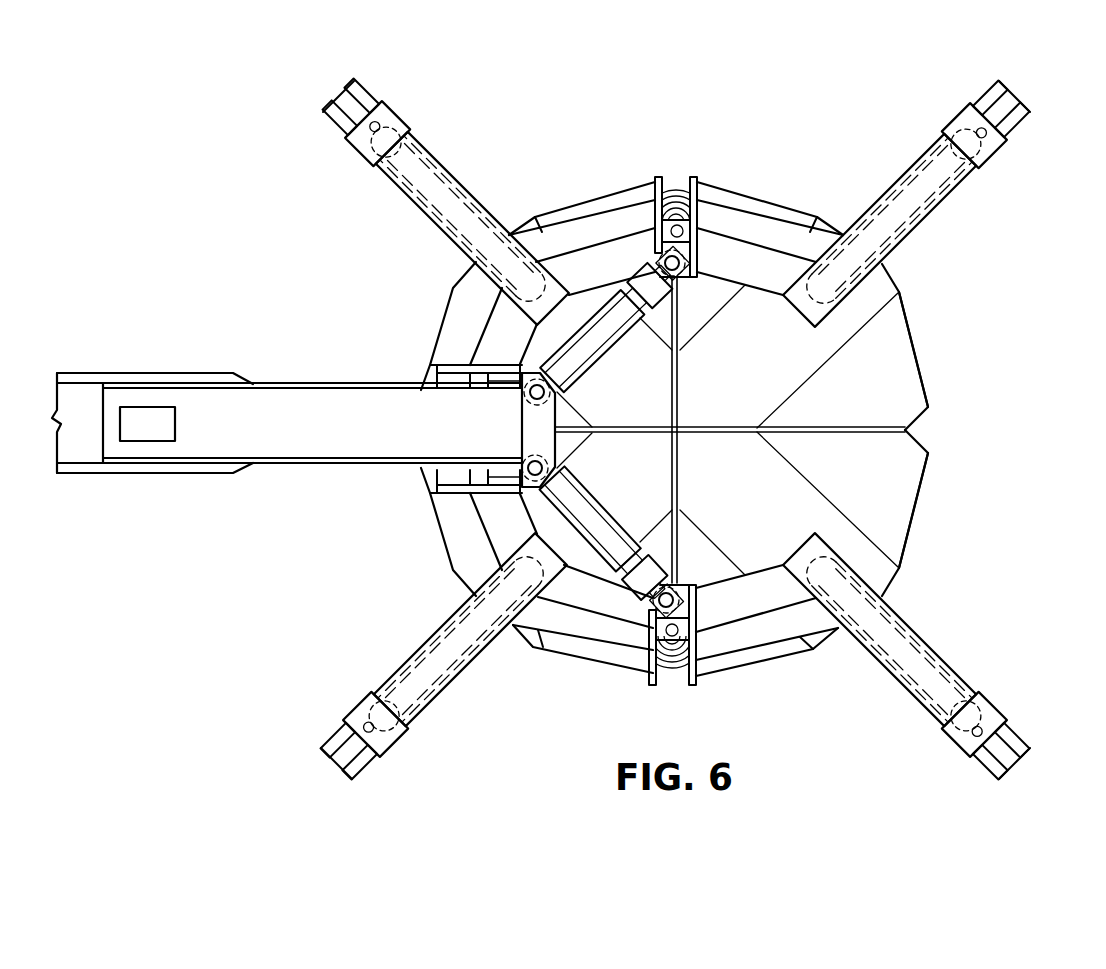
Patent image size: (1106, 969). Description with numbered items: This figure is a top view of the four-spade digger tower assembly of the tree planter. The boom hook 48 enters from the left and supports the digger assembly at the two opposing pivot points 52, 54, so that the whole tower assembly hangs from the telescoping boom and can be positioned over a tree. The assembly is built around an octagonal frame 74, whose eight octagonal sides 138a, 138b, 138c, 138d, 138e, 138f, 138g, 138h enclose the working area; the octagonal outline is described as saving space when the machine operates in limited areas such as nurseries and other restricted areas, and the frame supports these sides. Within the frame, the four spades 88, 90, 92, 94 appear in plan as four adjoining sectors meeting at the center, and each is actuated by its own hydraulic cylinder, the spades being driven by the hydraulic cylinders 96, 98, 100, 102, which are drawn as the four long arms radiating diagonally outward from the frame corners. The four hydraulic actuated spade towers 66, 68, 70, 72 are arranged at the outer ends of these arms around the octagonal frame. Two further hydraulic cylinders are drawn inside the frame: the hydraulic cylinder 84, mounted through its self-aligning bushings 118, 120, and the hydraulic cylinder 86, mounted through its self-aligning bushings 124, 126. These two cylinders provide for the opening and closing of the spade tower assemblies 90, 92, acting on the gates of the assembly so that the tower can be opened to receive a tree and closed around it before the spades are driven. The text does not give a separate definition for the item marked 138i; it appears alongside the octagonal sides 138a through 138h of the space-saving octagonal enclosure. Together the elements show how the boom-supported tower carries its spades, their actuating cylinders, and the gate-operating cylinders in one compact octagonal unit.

The boom hook 48 is at (287, 410).
The pivot point 52 is at (488, 365).
The pivot point 54 is at (488, 494).
The spade tower 66 is at (353, 780).
The spade tower 68 is at (1031, 750).
The spade tower 70 is at (1000, 82).
The spade tower 72 is at (352, 79).
The octagonal frame 74 is at (698, 682).
The hydraulic cylinder 84 is at (613, 544).
The hydraulic cylinder 86 is at (616, 317).
The spade 88 is at (655, 478).
The spade 90 is at (730, 478).
The spade 92 is at (730, 408).
The spade 94 is at (655, 406).
The hydraulic cylinder 96 is at (472, 649).
The hydraulic cylinder 98 is at (897, 656).
The hydraulic cylinder 100 is at (889, 252).
The hydraulic cylinder 102 is at (495, 248).
The self-aligning bushing 118 is at (535, 461).
The self-aligning bushing 120 is at (653, 600).
The self-aligning bushing 124 is at (536, 399).
The self-aligning bushing 126 is at (659, 263).
The octagonal side 138a is at (581, 664).
The octagonal side 138b is at (765, 664).
The octagonal side 138c is at (908, 534).
The octagonal side 138d is at (909, 328).
The octagonal side 138e is at (768, 202).
The octagonal side 138f is at (594, 200).
The octagonal side 138g is at (444, 322).
The octagonal side 138h is at (443, 535).
The frame section 138i is at (960, 270).